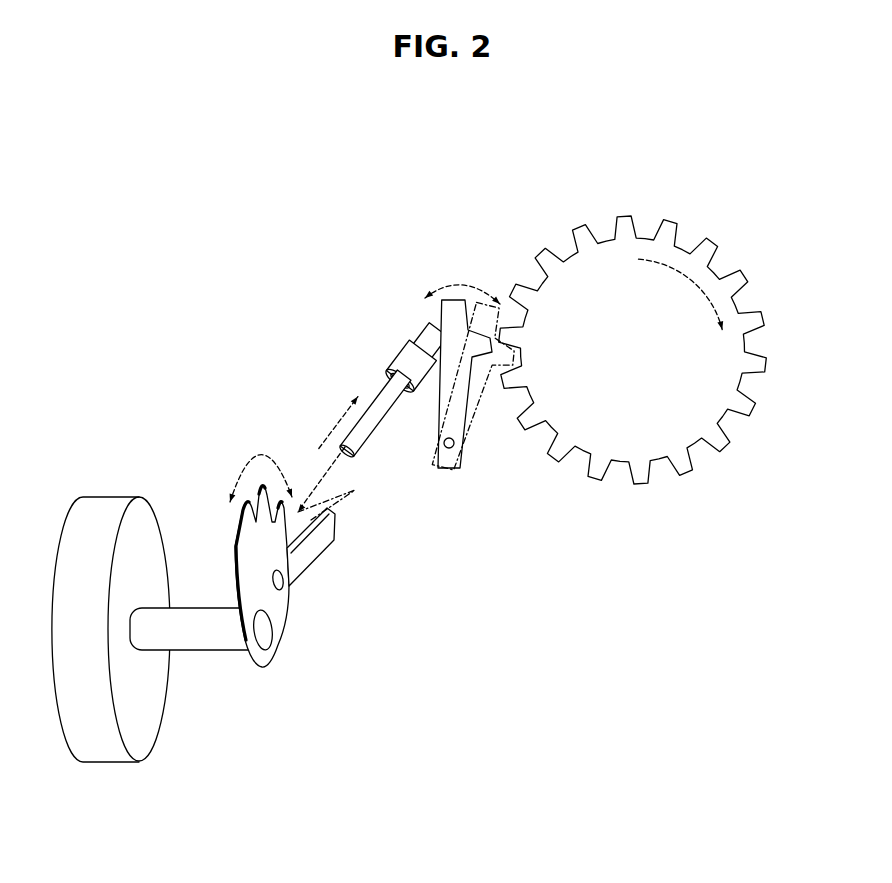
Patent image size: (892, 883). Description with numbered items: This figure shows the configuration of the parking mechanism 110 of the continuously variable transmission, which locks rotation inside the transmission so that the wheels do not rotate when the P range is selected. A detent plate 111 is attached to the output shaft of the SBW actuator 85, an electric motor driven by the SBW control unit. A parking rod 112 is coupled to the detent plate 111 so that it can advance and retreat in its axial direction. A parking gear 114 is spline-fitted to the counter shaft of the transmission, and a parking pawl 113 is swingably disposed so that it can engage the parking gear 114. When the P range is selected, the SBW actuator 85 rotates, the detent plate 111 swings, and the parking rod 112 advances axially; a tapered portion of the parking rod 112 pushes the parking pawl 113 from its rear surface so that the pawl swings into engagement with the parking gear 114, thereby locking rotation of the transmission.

The parking mechanism 110 is at (376, 179).
The SBW actuator 85 is at (120, 497).
The detent plate 111 is at (283, 618).
The parking rod 112 is at (378, 427).
The parking pawl 113 is at (460, 462).
The parking gear 114 is at (745, 276).